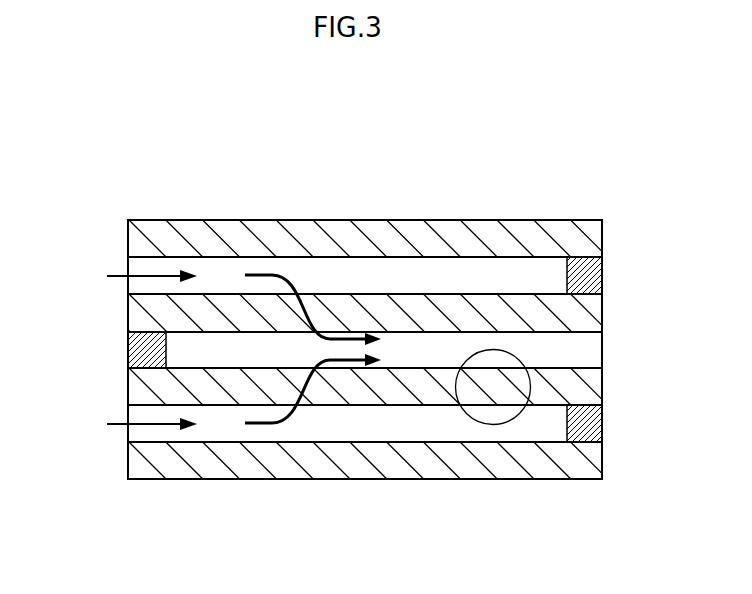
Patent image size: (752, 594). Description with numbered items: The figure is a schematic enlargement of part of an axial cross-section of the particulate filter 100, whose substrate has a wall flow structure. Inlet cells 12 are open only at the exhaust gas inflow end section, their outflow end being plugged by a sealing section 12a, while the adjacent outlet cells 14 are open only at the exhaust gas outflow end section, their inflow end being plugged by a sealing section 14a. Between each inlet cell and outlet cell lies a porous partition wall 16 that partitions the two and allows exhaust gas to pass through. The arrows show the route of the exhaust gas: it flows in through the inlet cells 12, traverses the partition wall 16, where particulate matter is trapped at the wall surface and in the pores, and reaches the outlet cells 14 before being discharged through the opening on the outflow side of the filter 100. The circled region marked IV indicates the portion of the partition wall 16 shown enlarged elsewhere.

The particulate filter 100 is at (558, 185).
The inlet cells 12 is at (457, 273).
The sealing section 12a is at (603, 268).
The outlet cells 14 is at (583, 353).
The sealing section 14a is at (128, 343).
The partition wall 16 is at (335, 290).
The section IV region IV is at (518, 420).